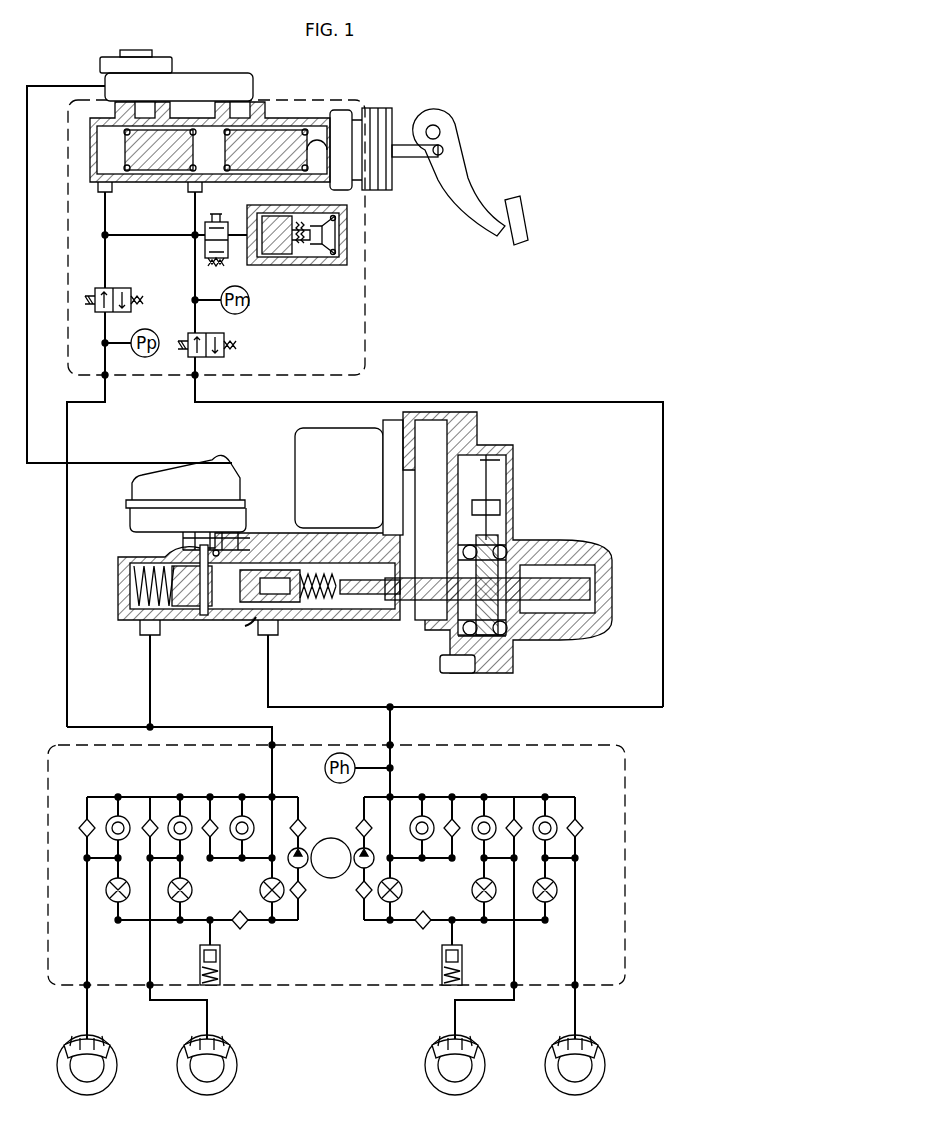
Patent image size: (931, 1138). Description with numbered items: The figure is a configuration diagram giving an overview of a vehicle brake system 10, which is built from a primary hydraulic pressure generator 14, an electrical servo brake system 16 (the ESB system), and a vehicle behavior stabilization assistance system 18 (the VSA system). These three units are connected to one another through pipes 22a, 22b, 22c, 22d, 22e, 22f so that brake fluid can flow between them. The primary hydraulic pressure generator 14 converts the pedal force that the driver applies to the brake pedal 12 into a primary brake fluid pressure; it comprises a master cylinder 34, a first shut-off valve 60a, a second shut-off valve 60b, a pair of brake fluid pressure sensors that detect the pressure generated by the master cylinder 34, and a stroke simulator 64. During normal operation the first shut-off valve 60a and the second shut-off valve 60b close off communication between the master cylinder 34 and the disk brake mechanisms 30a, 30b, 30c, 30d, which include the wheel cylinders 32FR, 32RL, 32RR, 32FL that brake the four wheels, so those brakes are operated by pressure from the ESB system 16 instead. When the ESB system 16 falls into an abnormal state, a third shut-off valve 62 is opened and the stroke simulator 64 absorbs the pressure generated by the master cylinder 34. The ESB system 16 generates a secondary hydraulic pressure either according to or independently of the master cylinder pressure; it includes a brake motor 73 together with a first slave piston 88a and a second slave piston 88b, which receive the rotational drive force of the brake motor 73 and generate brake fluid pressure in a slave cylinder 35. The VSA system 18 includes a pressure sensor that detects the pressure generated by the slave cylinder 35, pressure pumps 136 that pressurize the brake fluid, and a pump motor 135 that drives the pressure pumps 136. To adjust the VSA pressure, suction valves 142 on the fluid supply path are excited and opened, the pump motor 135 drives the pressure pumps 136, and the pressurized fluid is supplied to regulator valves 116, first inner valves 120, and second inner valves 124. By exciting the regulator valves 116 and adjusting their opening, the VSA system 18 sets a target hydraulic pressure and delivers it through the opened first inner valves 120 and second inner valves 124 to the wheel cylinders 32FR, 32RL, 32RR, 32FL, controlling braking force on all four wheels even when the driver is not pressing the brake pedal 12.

The vehicle brake system 10 is at (477, 86).
The brake pedal 12 is at (525, 217).
The primary hydraulic pressure generator 14 is at (365, 290).
The electrical servo brake system 16 is at (498, 520).
The vehicle behavior stabilization assistance system 18 is at (530, 745).
The pipe 22a is at (665, 480).
The pipe 22b is at (306, 706).
The pipe 22c is at (392, 720).
The pipe 22d is at (66, 547).
The pipe 22e is at (148, 685).
The pipe 22f is at (208, 727).
The disk brake mechanism 30a is at (606, 1085).
The disk brake mechanism 30b is at (486, 1085).
The disk brake mechanism 30c is at (238, 1085).
The disk brake mechanism 30d is at (118, 1085).
The wheel cylinder 32FL is at (110, 1045).
The wheel cylinder 32RR is at (230, 1045).
The wheel cylinder 32RL is at (478, 1045).
The wheel cylinder 32FR is at (598, 1045).
The master cylinder 34 is at (284, 118).
The slave cylinder 35 is at (274, 524).
The first shut-off valve 60a is at (222, 333).
The second shut-off valve 60b is at (112, 288).
The third shut-off valve 62 is at (218, 222).
The stroke simulator 64 is at (358, 227).
The brake motor 73 is at (349, 477).
The first slave piston 88a is at (432, 637).
The second slave piston 88b is at (262, 625).
The regulator valve 116 is at (237, 816).
The first inner valve 120 is at (113, 816).
The second inner valve 124 is at (175, 816).
The pump motor 135 is at (331, 838).
The pressure pump 136 is at (358, 866).
The suction valve 142 is at (278, 900).